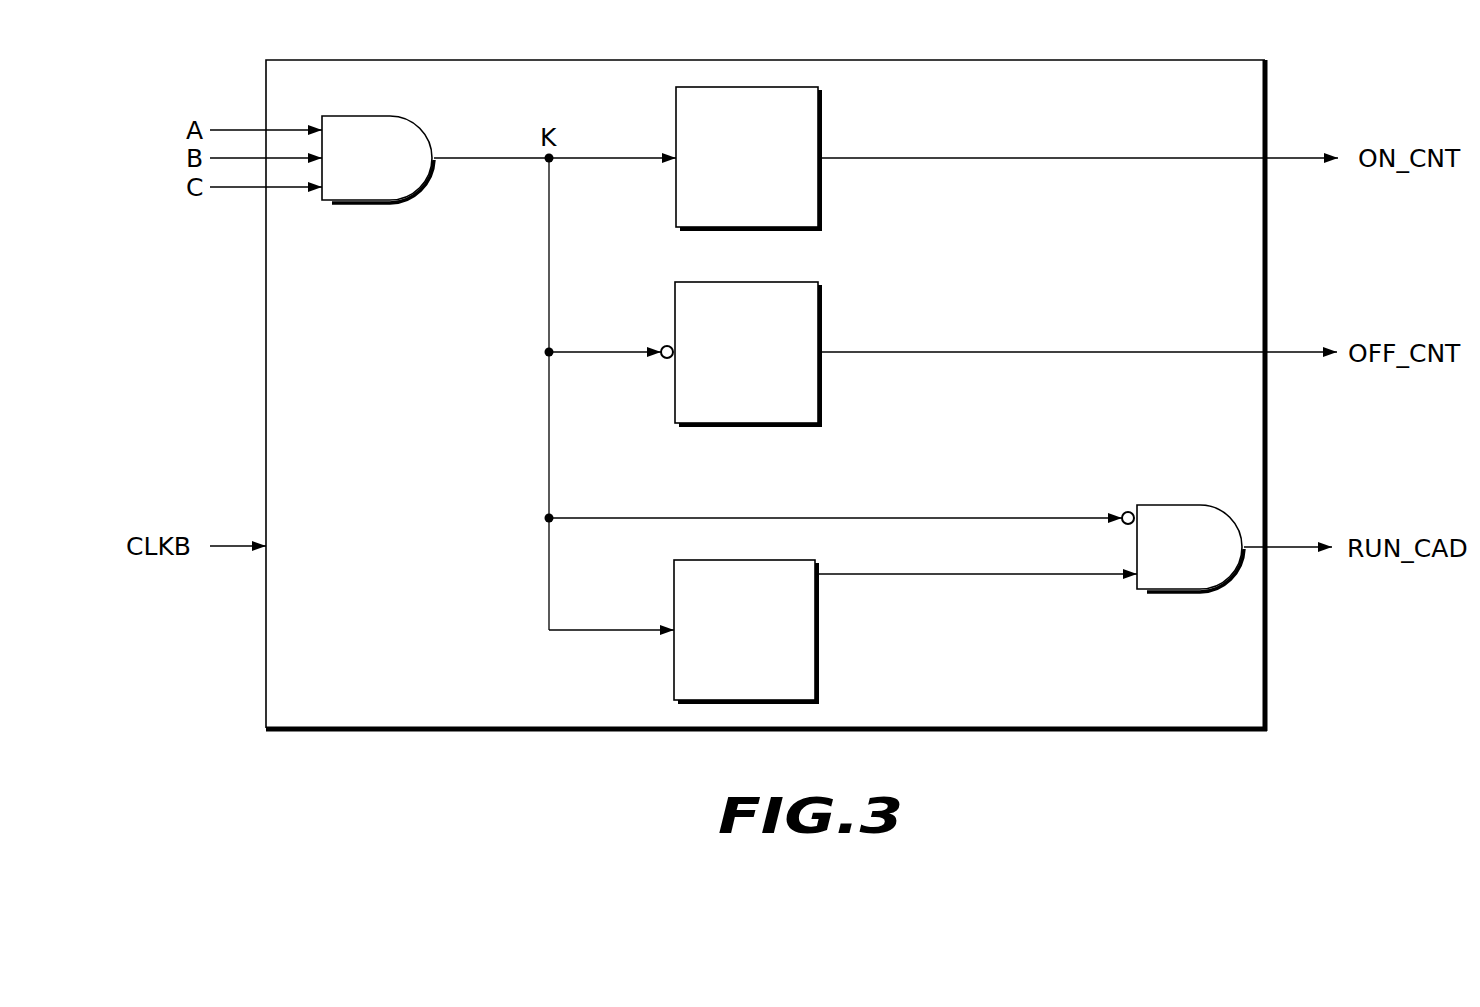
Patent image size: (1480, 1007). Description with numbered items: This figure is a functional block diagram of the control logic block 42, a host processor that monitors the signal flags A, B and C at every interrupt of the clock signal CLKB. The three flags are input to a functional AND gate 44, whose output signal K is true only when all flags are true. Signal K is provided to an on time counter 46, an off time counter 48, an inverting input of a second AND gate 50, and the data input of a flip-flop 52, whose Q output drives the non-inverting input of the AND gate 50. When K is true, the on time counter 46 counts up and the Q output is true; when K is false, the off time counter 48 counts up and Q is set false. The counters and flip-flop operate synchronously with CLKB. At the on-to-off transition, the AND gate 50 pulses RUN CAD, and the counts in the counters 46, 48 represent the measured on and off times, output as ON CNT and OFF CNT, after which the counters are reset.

The control logic block 42 is at (1181, 120).
The AND gate 44 is at (397, 116).
The on time counter 46 is at (818, 87).
The off time counter 48 is at (818, 283).
The AND gate 50 is at (1137, 507).
The flip-flop 52 is at (815, 562).